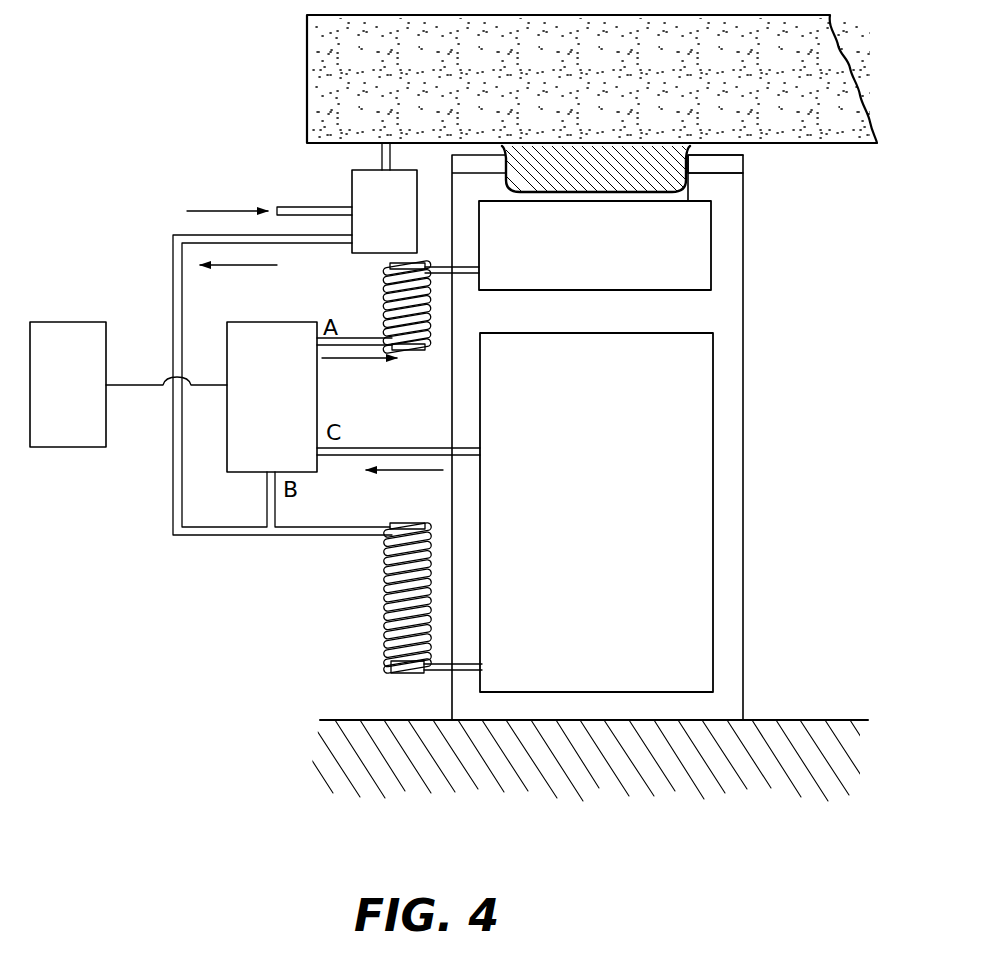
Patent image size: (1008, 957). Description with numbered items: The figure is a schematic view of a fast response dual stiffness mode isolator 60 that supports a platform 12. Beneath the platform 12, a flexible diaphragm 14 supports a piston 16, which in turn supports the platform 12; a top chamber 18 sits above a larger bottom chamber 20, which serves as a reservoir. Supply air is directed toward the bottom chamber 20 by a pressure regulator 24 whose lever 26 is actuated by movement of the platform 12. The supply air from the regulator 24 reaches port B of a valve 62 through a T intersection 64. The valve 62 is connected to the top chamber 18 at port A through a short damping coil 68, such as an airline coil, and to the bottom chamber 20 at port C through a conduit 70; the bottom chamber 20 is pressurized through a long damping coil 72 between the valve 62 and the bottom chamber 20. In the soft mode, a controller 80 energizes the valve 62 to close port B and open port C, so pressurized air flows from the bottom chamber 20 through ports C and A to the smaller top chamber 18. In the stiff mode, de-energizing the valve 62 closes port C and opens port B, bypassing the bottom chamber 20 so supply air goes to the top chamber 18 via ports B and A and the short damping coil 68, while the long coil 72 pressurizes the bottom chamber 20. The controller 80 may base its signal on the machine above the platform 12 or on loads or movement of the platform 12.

The platform 12 is at (322, 61).
The flexible diaphragm 14 is at (724, 173).
The piston 16 is at (604, 176).
The top chamber 18 is at (612, 261).
The bottom chamber 20 is at (612, 527).
The pressure regulator 24 is at (398, 222).
The lever 26 is at (382, 156).
The fast response dual stiffness mode isolator 60 is at (780, 484).
The valve 62 is at (286, 404).
The T intersection 64 is at (267, 499).
The short damping coil 68 is at (383, 292).
The conduit 70 is at (412, 446).
The long damping coil 72 is at (385, 640).
The controller 80 is at (82, 396).